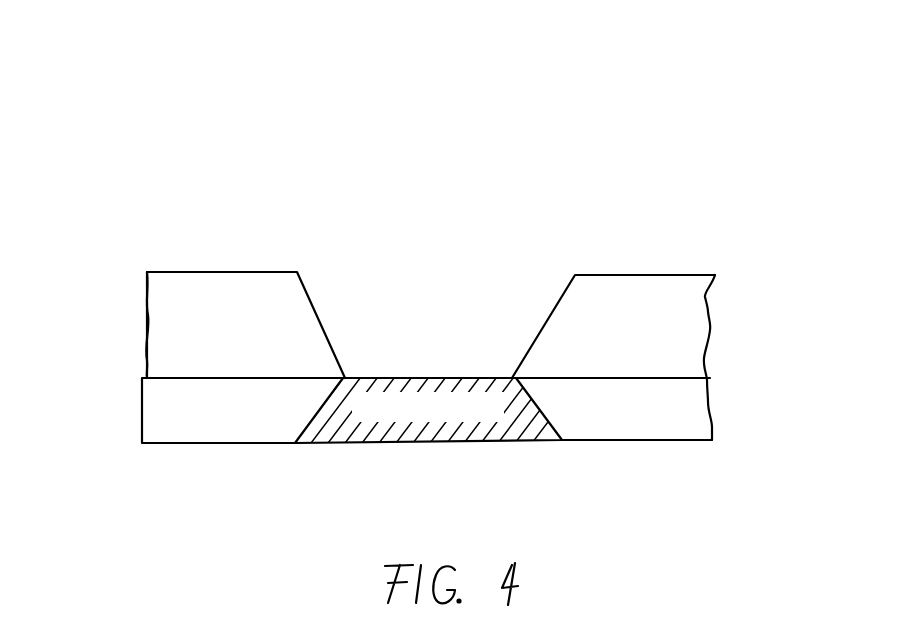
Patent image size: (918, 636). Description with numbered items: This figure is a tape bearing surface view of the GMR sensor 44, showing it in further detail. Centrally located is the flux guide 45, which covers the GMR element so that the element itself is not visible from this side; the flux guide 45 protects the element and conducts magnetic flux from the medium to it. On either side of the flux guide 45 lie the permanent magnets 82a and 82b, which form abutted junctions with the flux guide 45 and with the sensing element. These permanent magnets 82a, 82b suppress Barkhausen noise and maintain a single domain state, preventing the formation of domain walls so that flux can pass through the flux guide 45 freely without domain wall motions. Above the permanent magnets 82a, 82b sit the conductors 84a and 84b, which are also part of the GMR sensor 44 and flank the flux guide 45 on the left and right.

The GMR sensor 44 is at (421, 283).
The conductor 84a is at (191, 325).
The conductor 84b is at (652, 330).
The permanent magnet 82a is at (183, 418).
The permanent magnet 82b is at (668, 409).
The flux guide 45 is at (438, 436).